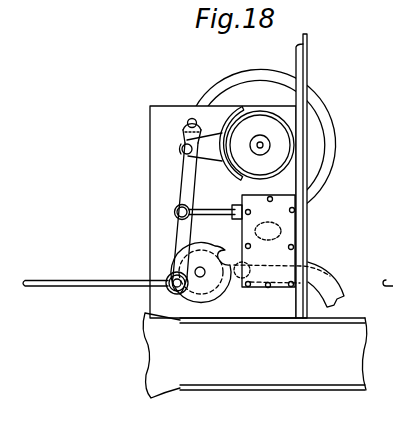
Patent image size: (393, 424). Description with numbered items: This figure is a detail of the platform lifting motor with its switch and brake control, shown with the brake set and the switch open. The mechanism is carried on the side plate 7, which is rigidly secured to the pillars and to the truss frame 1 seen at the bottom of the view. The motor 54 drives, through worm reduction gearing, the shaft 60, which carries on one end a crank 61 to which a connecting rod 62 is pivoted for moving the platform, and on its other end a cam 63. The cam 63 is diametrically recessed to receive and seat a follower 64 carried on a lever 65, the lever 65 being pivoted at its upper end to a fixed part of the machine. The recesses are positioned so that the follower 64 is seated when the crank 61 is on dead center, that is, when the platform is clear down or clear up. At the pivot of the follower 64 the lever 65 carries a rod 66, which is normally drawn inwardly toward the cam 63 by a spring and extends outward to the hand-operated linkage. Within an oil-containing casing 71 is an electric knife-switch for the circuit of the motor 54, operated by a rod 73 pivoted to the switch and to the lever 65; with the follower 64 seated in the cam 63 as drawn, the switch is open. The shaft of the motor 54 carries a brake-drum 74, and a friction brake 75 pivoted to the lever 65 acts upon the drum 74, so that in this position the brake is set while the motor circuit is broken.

The truss frame 1 is at (255, 355).
The side plate 7 is at (156, 171).
The motor 54 is at (337, 133).
The shaft 60 is at (200, 277).
The crank 61 is at (268, 231).
The connecting rod 62 is at (333, 290).
The cam 63 is at (220, 293).
The follower 64 is at (165, 289).
The lever 65 is at (173, 236).
The rod 66 is at (88, 275).
The oil-containing casing 71 is at (287, 242).
The rod 73 is at (209, 206).
The brake-drum 74 is at (263, 112).
The friction brake 75 is at (228, 116).